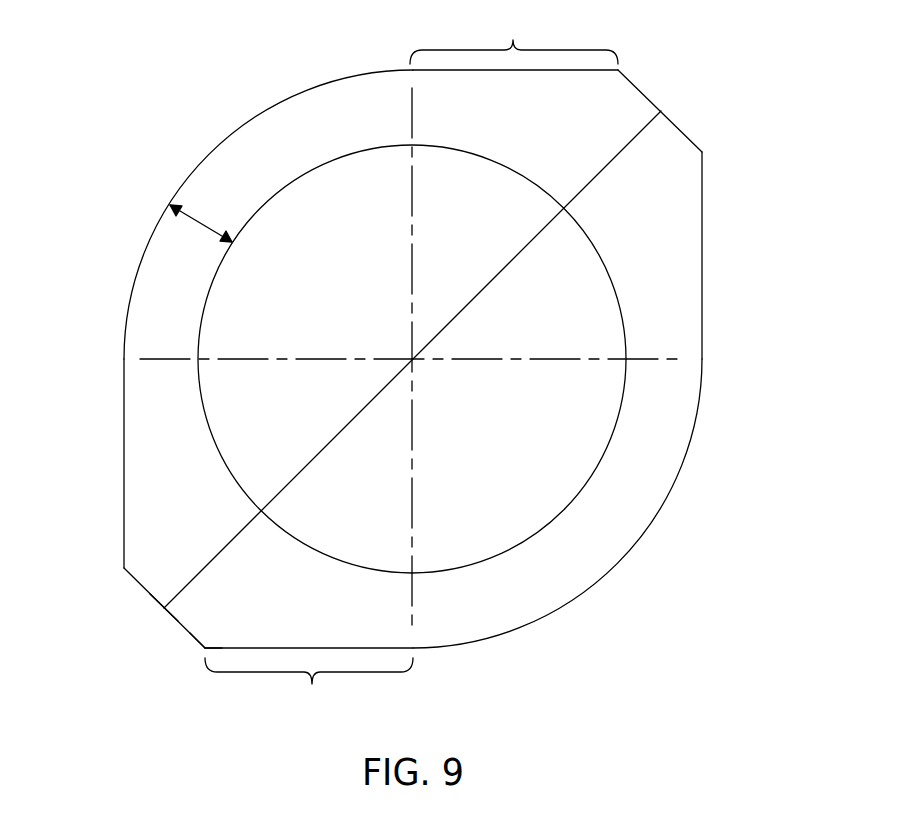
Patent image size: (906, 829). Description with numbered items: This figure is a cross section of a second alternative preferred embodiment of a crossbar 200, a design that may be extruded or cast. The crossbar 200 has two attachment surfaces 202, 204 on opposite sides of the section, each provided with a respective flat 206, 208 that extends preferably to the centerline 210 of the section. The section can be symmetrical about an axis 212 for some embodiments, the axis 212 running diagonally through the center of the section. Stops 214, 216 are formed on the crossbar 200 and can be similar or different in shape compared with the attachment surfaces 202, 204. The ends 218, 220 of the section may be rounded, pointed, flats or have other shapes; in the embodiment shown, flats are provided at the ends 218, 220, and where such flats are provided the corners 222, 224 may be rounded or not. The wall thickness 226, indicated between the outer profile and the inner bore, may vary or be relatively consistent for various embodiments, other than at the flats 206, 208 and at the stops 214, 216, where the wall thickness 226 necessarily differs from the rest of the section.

The crossbar 200 is at (153, 392).
The attachment surface 202 is at (514, 39).
The attachment surface 204 is at (309, 686).
The flat 206 is at (497, 62).
The flat 208 is at (314, 654).
The centerline 210 is at (413, 468).
The axis 212 is at (603, 168).
The stop 214 is at (703, 255).
The stop 216 is at (124, 462).
The end 218 is at (637, 82).
The end 220 is at (150, 598).
The corner 222 is at (124, 568).
The corner 224 is at (205, 652).
The wall thickness 226 is at (202, 218).